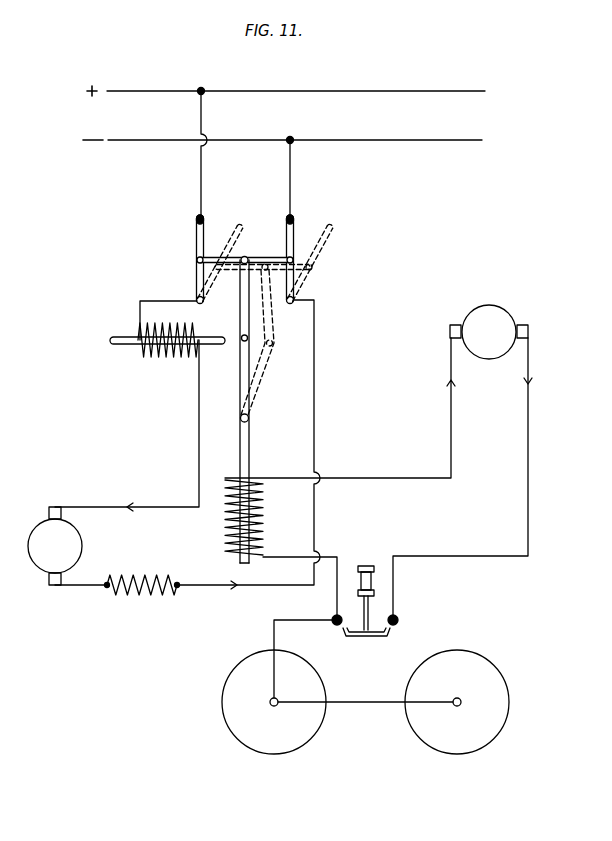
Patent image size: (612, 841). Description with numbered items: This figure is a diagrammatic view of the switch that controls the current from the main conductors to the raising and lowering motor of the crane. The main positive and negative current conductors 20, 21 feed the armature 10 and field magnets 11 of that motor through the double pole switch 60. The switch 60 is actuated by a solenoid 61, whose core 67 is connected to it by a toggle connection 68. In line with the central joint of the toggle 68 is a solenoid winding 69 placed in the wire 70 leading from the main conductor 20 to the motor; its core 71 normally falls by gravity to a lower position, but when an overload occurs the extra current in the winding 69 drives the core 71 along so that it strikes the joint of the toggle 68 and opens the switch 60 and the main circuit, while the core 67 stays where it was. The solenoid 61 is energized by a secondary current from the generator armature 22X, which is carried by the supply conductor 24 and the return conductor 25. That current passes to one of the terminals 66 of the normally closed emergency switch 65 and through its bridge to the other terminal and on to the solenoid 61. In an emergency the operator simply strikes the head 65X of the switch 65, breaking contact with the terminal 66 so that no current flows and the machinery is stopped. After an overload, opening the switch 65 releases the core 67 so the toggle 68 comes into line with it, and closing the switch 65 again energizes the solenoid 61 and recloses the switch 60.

The main positive current conductor 20 is at (285, 91).
The main negative current conductor 21 is at (335, 140).
The double pole switch 60 is at (287, 224).
The core of solenoid 67 is at (250, 460).
The toggle connection 68 is at (245, 322).
The wire 70 is at (168, 300).
The solenoid winding 69 is at (178, 354).
The core of solenoid 71 is at (209, 345).
The solenoid 61 is at (232, 520).
The armature of raising and lowering motor 10 is at (67, 546).
The field magnets 11 is at (145, 587).
The armature of generator 22X is at (489, 332).
The return conductor 25 is at (450, 406).
The supply conductor 24 is at (530, 441).
The head of emergency switch 65X is at (368, 580).
The terminals of emergency switch 66 is at (334, 617).
The emergency switch 65 is at (365, 639).